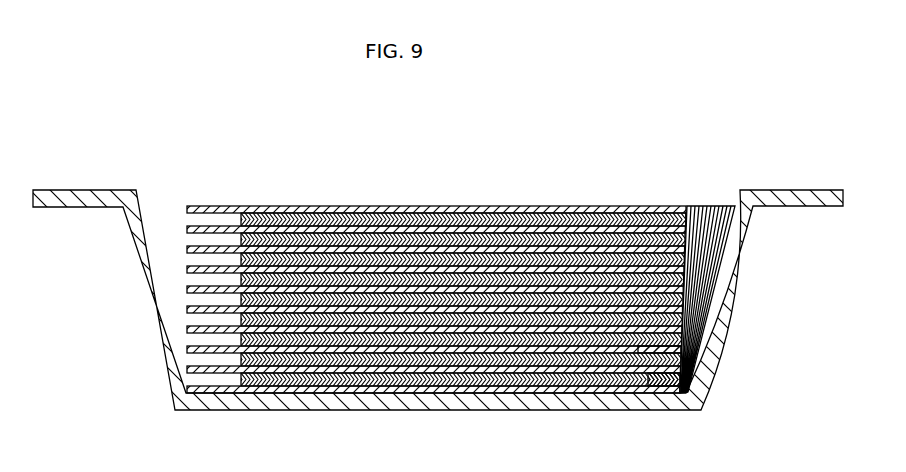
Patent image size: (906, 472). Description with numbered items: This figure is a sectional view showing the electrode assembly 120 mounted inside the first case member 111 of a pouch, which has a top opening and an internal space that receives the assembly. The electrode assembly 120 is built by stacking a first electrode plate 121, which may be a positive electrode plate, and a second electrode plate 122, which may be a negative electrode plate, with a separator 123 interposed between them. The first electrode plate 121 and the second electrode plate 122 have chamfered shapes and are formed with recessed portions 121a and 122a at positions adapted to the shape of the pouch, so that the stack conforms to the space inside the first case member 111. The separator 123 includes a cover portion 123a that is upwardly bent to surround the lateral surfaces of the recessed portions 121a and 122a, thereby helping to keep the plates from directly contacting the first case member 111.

The first case member 111 is at (785, 186).
The electrode assembly 120 is at (500, 279).
The first electrode plate 121 is at (323, 370).
The second electrode plate 122 is at (420, 353).
The separator 123 is at (567, 343).
The recessed portion 121a is at (640, 369).
The recessed portion 122a is at (685, 360).
The cover portion 123a is at (714, 302).